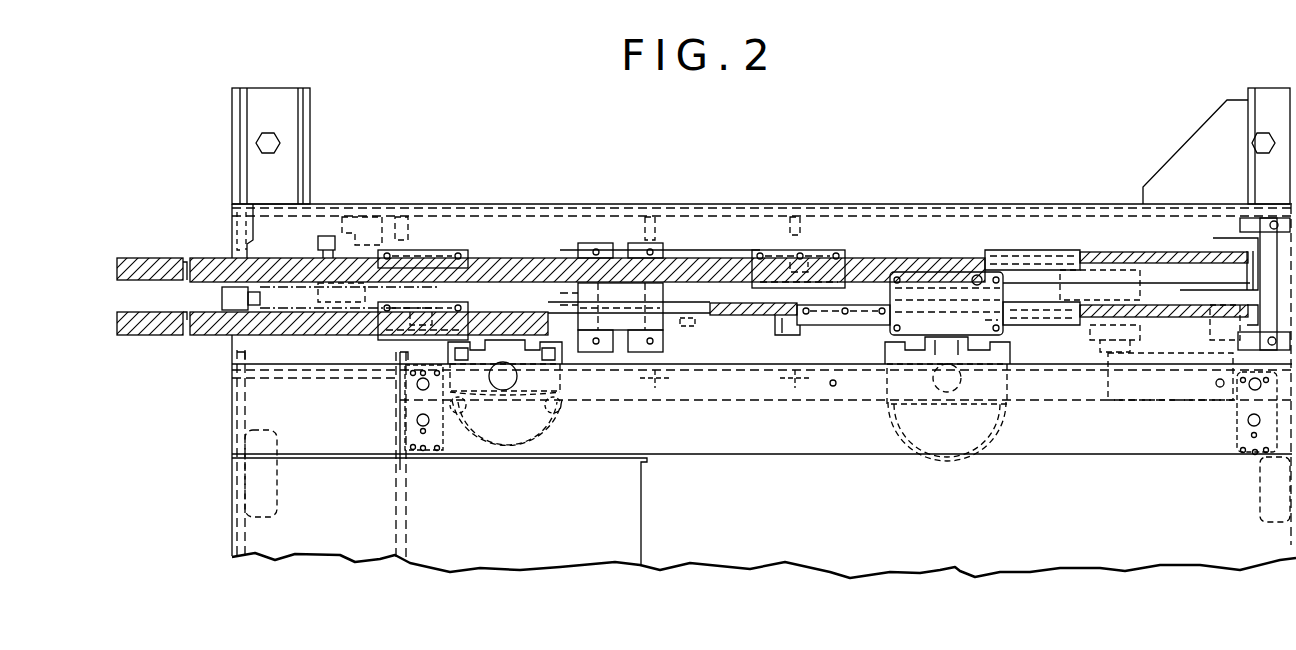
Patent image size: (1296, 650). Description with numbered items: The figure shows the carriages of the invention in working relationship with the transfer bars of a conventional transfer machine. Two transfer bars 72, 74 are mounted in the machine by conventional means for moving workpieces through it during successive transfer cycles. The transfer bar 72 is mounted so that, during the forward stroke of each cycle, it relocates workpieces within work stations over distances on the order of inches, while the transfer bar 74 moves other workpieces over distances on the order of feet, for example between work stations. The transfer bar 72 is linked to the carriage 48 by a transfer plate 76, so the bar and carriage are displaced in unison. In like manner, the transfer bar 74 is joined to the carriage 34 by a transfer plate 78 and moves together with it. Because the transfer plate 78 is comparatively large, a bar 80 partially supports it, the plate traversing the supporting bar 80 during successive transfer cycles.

The transfer bar 74 is at (210, 258).
The transfer bar 72 is at (210, 336).
The transfer plate 76 is at (505, 334).
The transfer plate 78 is at (940, 292).
The bar 80 is at (800, 330).
The carriage 48 is at (582, 390).
The carriage 34 is at (886, 406).